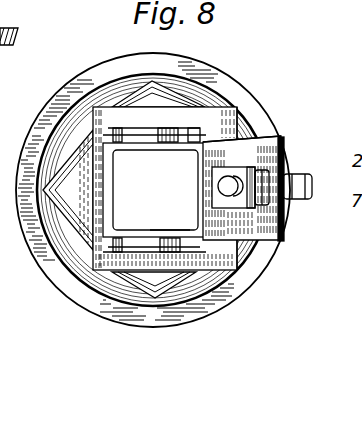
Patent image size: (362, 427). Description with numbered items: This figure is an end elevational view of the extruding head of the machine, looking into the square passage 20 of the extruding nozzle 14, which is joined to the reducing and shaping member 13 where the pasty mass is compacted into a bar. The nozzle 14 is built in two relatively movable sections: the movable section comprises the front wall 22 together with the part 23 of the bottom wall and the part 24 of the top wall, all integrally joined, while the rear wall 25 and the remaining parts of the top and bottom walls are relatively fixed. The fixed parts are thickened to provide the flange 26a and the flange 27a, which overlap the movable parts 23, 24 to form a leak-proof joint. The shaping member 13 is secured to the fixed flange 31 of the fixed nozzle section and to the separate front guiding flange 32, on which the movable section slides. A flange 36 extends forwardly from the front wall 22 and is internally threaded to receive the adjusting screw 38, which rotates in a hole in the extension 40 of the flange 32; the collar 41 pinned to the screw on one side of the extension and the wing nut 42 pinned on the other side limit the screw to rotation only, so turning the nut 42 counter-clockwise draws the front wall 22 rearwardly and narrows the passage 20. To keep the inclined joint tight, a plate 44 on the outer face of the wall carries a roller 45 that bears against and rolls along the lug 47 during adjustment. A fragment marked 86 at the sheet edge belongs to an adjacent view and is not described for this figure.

The reducing and shaping member 13 is at (202, 100).
The extruding nozzle 14 is at (166, 226).
The passage 20 is at (201, 163).
The front wall 22 is at (203, 183).
The part of bottom wall 23 is at (132, 233).
The part of top wall 24 is at (140, 143).
The rear wall 25 is at (110, 183).
The flange 26a is at (100, 277).
The flange 27a is at (161, 124).
The fixed flange 31 is at (234, 115).
The front guiding flange 32 is at (274, 240).
The flange 36 is at (275, 244).
The adjusting screw 38 is at (242, 174).
The extension 40 is at (274, 140).
The collar 41 is at (268, 180).
The wing nut 42 is at (300, 193).
The plate 44 is at (111, 125).
The roller 45 is at (171, 128).
The lug 47 is at (157, 133).
The adjacent figure fragment 86 is at (17, 22).